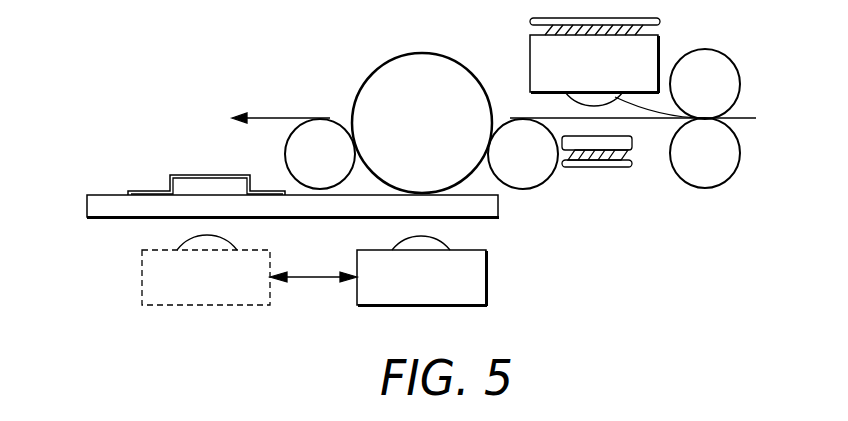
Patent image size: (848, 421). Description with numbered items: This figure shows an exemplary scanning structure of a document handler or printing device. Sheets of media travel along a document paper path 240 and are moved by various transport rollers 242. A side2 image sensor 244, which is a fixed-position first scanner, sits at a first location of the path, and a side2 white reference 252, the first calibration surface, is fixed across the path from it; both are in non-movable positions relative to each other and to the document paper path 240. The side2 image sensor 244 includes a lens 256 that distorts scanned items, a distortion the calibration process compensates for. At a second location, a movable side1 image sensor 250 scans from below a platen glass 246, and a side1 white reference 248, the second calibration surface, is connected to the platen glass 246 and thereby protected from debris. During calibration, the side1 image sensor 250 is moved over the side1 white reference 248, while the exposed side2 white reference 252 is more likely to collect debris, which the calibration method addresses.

The document paper path 240 is at (255, 115).
The transport rollers 242 is at (377, 66).
The side2 image sensor 244 is at (530, 60).
The platen glass 246 is at (87, 203).
The side1 white reference 248 is at (175, 195).
The side1 image sensor 250 is at (486, 277).
The side2 white reference 252 is at (642, 154).
The lens 256 is at (705, 118).